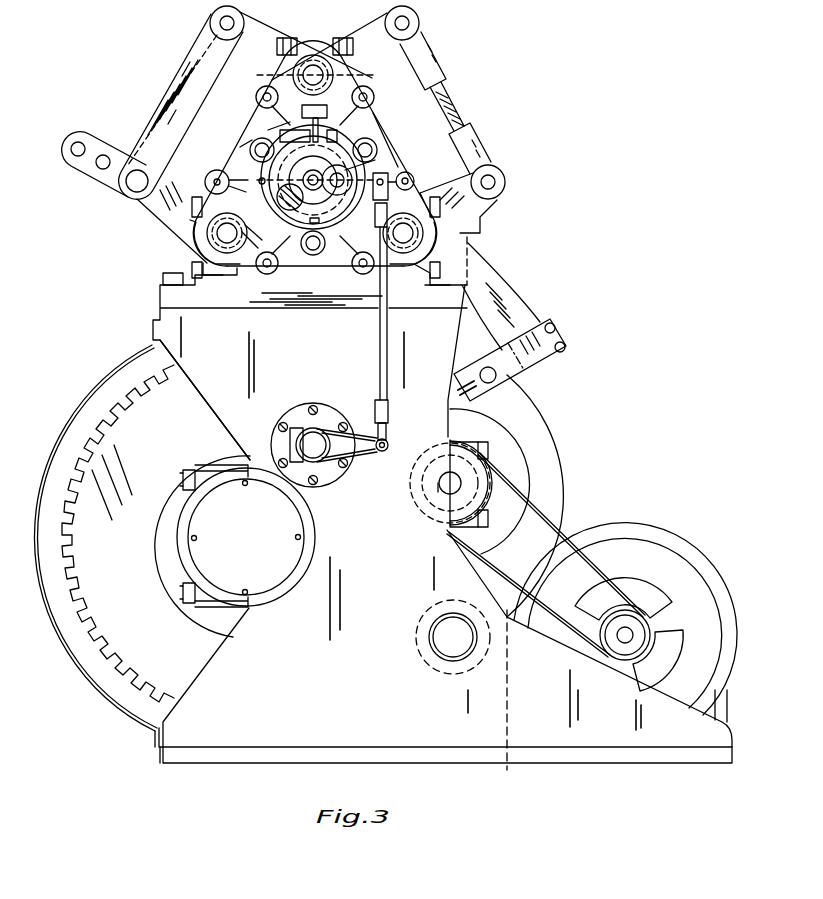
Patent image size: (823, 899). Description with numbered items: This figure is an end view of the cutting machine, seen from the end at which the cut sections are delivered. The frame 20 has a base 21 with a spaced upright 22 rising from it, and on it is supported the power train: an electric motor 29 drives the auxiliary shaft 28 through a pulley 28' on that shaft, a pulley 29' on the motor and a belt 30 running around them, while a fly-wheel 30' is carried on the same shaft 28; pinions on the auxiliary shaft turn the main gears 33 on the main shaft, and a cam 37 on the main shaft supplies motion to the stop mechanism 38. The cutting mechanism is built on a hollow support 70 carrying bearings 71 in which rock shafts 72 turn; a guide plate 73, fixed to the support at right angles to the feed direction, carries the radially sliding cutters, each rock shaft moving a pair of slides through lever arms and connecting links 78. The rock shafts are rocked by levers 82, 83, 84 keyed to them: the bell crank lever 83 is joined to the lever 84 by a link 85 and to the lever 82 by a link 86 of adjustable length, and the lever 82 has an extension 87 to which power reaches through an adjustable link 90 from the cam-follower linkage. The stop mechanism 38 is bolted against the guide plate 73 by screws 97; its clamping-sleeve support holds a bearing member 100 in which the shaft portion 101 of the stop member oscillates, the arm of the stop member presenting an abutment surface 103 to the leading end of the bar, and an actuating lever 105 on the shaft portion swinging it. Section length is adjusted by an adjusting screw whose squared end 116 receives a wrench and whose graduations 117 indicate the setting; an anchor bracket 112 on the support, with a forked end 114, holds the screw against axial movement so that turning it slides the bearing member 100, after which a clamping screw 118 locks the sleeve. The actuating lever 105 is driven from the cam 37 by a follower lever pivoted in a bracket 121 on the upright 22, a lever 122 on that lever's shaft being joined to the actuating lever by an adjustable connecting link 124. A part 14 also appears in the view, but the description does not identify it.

The pin 14 is at (403, 172).
The frame 20 is at (450, 420).
The base 21 is at (477, 765).
The upright 22 is at (210, 400).
The auxiliary shaft 28 is at (437, 486).
The pulley 28' is at (520, 448).
The electric motor 29 is at (625, 622).
The pulley 29' is at (548, 556).
The belt 30 is at (518, 481).
The fly-wheel 30' is at (561, 496).
The main gears 33 is at (93, 646).
The cam 37 is at (202, 611).
The stop mechanism 38 is at (314, 121).
The support 70 is at (160, 296).
The bearings 71 is at (320, 45).
The rock shafts 72 is at (336, 75).
The guide plate 73 is at (372, 131).
The connecting links 78 is at (372, 100).
The lever 82 is at (483, 208).
The bell crank lever 83 is at (372, 22).
The lever 84 is at (180, 185).
The link 85 is at (197, 100).
The link 86 is at (452, 108).
The extension 87 is at (524, 313).
The link 90 is at (480, 393).
The screws 97 is at (252, 148).
The bearing member 100 is at (333, 160).
The shaft portion 101 is at (362, 147).
The abutment surface 103 is at (308, 134).
The actuating lever 105 is at (370, 168).
The anchor bracket 112 is at (245, 186).
The forked end 114 is at (266, 242).
The squared end 116 is at (292, 228).
The graduations 117 is at (252, 205).
The clamping screw 118 is at (277, 131).
The bracket 121 is at (318, 430).
The lever 122 is at (366, 455).
The connecting link 124 is at (387, 328).